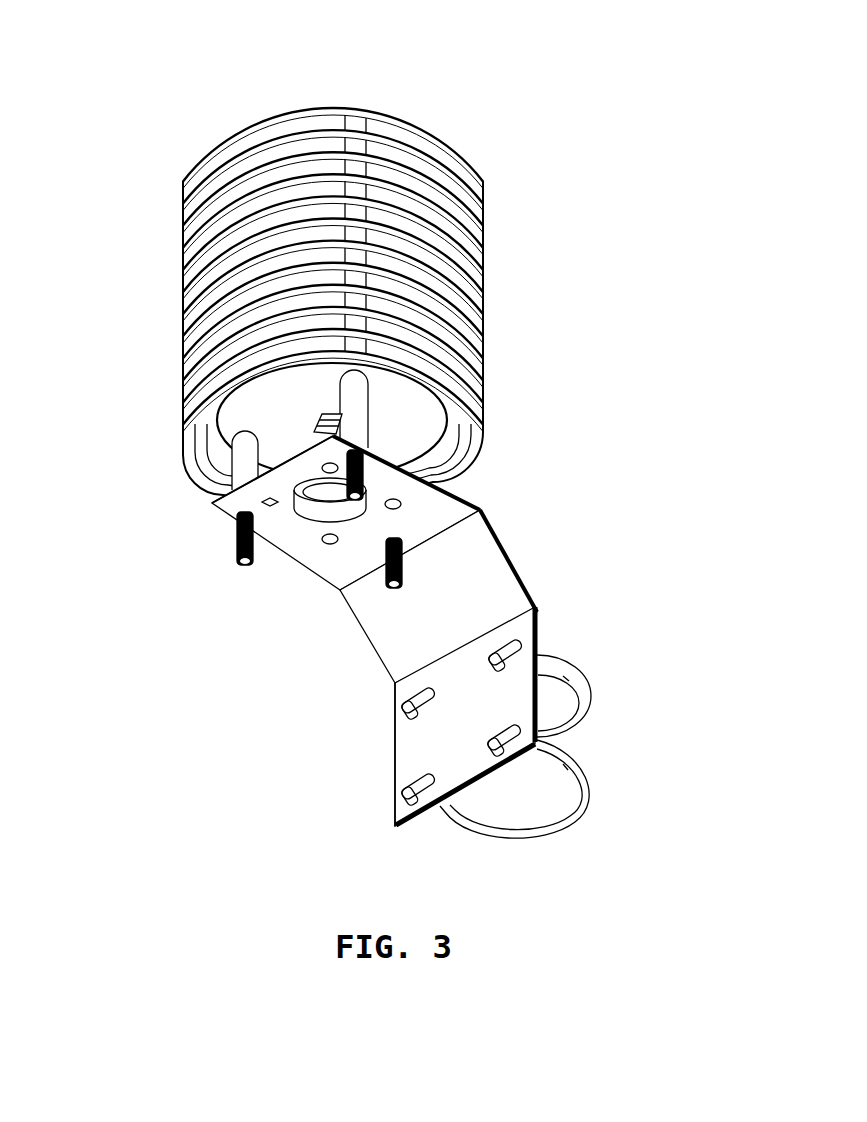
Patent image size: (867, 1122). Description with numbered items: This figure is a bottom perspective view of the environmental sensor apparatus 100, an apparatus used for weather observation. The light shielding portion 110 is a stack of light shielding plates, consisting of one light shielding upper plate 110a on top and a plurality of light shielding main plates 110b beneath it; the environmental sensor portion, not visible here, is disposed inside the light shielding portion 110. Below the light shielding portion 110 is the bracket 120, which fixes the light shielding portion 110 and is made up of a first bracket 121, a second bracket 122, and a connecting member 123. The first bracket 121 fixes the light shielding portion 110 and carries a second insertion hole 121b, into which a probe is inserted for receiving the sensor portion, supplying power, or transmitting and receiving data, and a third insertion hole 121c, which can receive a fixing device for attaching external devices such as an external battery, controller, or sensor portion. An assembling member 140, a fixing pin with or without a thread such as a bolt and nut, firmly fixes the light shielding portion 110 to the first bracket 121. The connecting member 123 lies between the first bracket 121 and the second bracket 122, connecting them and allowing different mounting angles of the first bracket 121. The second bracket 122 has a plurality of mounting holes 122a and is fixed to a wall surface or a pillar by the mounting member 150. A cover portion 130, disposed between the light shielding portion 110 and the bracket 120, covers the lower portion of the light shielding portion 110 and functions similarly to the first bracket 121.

The environmental sensor apparatus 100 is at (352, 24).
The light shielding portion 110 is at (665, 152).
The light shielding upper plate 110a is at (483, 165).
The light shielding main plates 110b is at (483, 203).
The bracket 120 is at (512, 556).
The first bracket 121 is at (213, 507).
The second insertion hole 121b is at (353, 488).
The third insertion hole 121c is at (232, 497).
The second bracket 122 is at (440, 741).
The mounting holes 122a is at (538, 650).
The connecting member 123 is at (400, 632).
The cover portion 130 is at (388, 406).
The assembling member 140 is at (236, 545).
The mounting member 150 is at (596, 703).